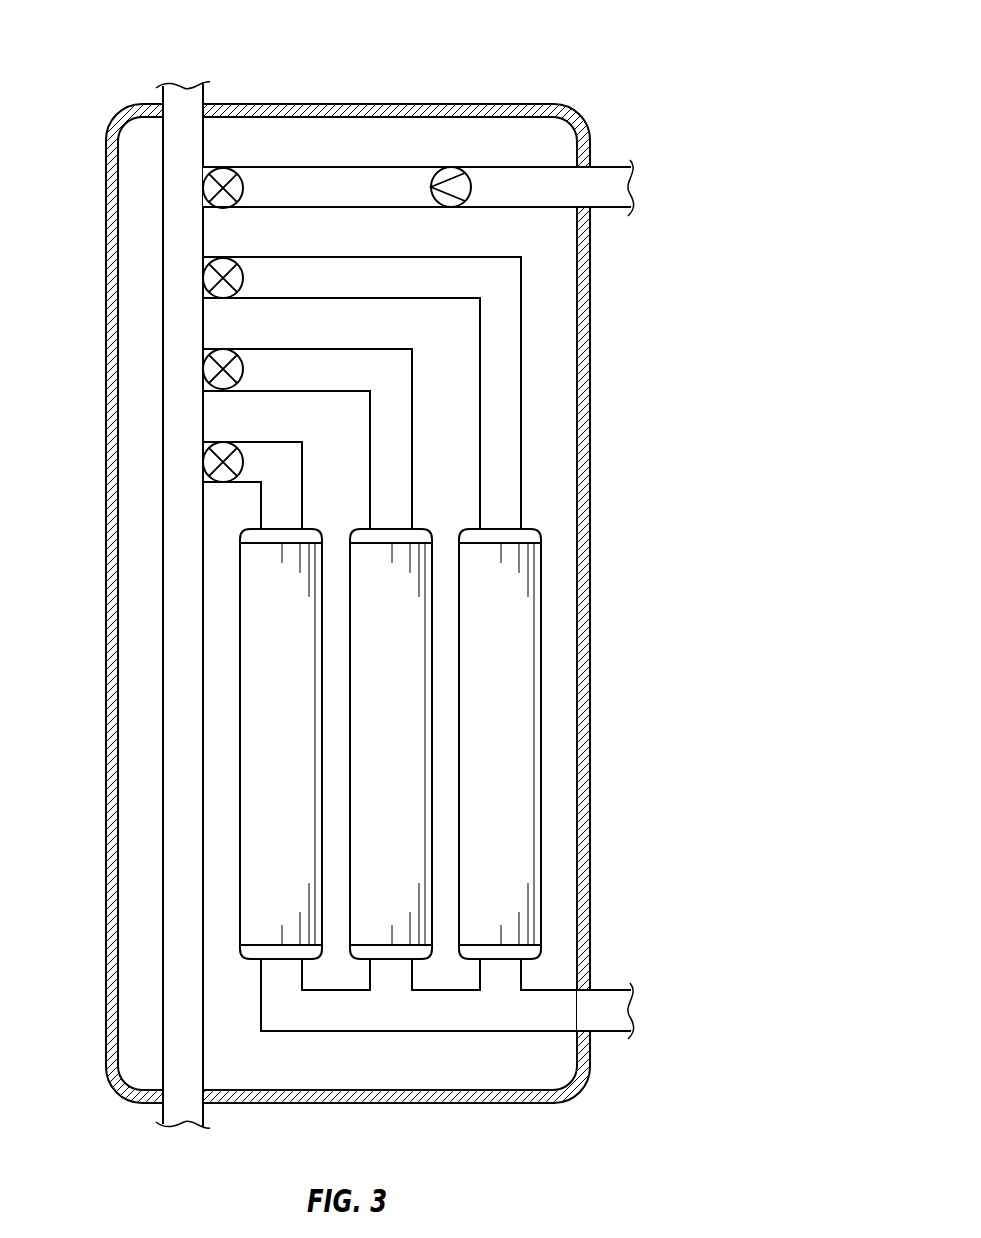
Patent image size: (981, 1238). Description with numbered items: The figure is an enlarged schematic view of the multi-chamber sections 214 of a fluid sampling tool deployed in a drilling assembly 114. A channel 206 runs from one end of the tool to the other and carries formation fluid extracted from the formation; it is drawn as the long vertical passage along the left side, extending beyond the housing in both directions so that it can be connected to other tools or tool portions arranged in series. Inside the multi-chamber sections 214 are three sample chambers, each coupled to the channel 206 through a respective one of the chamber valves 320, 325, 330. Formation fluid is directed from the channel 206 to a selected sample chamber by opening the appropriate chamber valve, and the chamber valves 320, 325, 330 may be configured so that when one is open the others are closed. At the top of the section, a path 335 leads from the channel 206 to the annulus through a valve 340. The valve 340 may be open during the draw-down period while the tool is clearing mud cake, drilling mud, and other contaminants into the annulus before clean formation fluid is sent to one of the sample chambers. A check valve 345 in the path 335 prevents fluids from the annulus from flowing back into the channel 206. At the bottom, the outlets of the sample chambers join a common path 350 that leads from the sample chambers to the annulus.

The multi-chamber section 214 is at (556, 60).
The drilling assembly 114 is at (594, 422).
The channel 206 is at (163, 530).
The chamber valve 320 is at (223, 442).
The chamber valve 325 is at (223, 349).
The chamber valve 330 is at (223, 258).
The path 335 is at (614, 167).
The valve 340 is at (223, 168).
The check valve 345 is at (451, 167).
The path 350 is at (613, 990).